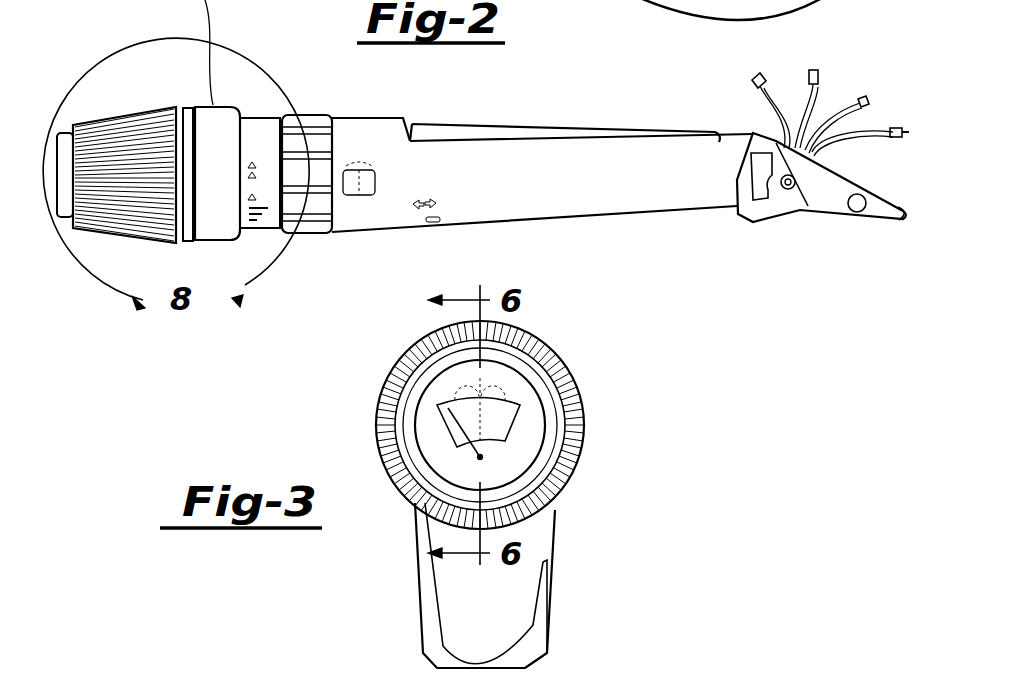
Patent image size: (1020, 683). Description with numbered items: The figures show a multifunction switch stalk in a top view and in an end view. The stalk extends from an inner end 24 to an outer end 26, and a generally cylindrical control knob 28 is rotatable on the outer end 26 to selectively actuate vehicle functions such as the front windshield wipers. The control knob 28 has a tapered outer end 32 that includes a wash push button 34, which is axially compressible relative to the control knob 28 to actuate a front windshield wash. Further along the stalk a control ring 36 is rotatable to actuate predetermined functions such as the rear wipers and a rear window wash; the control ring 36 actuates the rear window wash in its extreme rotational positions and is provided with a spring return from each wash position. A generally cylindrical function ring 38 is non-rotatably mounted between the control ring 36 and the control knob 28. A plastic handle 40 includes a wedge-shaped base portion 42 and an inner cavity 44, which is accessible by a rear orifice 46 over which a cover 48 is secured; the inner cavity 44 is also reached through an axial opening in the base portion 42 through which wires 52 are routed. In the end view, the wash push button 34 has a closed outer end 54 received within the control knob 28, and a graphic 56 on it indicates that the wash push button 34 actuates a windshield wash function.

In FIG. 2, the inner end 24 is at (903, 217).
In FIG. 2, the outer end 26 is at (62, 147).
In FIG. 2, the control knob 28 is at (177, 108).
In FIG. 3, the control knob 28 is at (384, 392).
In FIG. 2, the tapered outer end 32 is at (78, 123).
In FIG. 3, the tapered outer end 32 is at (413, 355).
In FIG. 2, the wash push button 34 is at (53, 172).
In FIG. 3, the wash push button 34 is at (566, 411).
In FIG. 2, the control ring 36 is at (309, 113).
In FIG. 2, the function ring 38 is at (258, 118).
In FIG. 2, the handle 40 is at (395, 118).
In FIG. 2, the base portion 42 is at (820, 203).
In FIG. 2, the inner cavity 44 is at (750, 138).
In FIG. 2, the rear orifice 46 is at (410, 125).
In FIG. 2, the cover 48 is at (548, 132).
In FIG. 2, the wires 52 is at (866, 98).
In FIG. 3, the closed outer end 54 is at (523, 452).
In FIG. 3, the graphic 56 is at (443, 427).